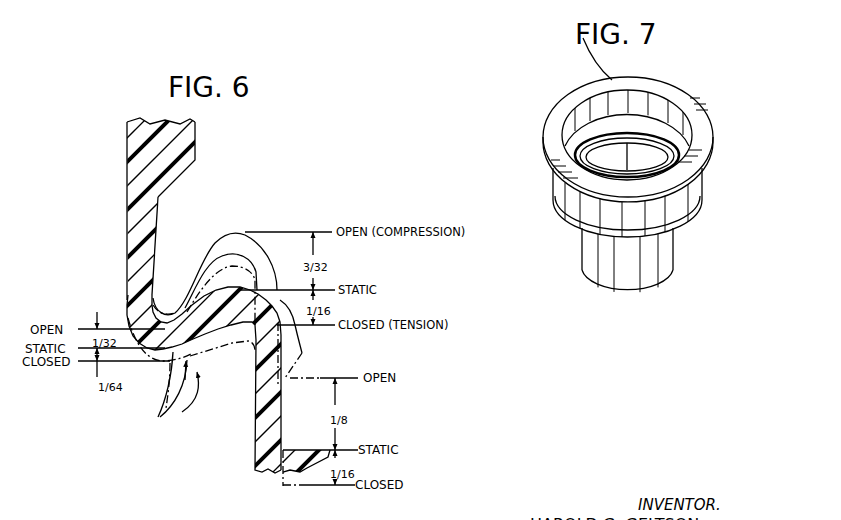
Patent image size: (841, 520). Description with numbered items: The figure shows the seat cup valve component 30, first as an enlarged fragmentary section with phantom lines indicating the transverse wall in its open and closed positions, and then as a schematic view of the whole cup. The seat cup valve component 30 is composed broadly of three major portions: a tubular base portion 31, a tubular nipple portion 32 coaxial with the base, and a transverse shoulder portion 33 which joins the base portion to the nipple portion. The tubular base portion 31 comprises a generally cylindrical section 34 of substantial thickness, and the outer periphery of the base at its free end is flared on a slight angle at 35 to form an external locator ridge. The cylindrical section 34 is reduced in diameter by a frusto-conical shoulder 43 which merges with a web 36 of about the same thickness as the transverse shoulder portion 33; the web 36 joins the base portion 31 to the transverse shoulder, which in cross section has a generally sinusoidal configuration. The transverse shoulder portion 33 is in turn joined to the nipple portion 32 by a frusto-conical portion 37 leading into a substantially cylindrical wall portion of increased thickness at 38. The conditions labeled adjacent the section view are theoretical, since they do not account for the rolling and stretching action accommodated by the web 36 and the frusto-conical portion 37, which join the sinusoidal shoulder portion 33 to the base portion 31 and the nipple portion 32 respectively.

In FIG. 6, the seat cup valve component 30 is at (118, 152).
In FIG. 7, the seat cup valve component 30 is at (535, 113).
In FIG. 6, the tubular base portion 31 is at (124, 171).
In FIG. 7, the tubular base portion 31 is at (706, 108).
In FIG. 6, the tubular nipple portion 32 is at (253, 471).
In FIG. 7, the tubular nipple portion 32 is at (680, 262).
In FIG. 6, the transverse shoulder portion 33 is at (165, 394).
In FIG. 7, the transverse shoulder portion 33 is at (704, 215).
In FIG. 6, the cylindrical section 34 is at (153, 121).
In FIG. 7, the cylindrical section 34 is at (577, 97).
In FIG. 7, the external locator ridge 35 is at (600, 198).
In FIG. 6, the web 36 is at (137, 261).
In FIG. 7, the web 36 is at (603, 222).
In FIG. 6, the frusto-conical portion 37 is at (285, 376).
In FIG. 6, the wall portion of increased thickness 38 is at (265, 432).
In FIG. 6, the frusto-conical shoulder 43 is at (180, 183).